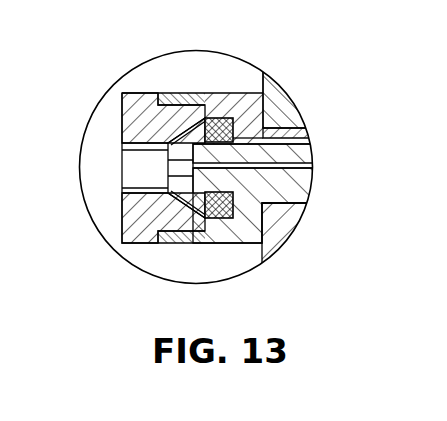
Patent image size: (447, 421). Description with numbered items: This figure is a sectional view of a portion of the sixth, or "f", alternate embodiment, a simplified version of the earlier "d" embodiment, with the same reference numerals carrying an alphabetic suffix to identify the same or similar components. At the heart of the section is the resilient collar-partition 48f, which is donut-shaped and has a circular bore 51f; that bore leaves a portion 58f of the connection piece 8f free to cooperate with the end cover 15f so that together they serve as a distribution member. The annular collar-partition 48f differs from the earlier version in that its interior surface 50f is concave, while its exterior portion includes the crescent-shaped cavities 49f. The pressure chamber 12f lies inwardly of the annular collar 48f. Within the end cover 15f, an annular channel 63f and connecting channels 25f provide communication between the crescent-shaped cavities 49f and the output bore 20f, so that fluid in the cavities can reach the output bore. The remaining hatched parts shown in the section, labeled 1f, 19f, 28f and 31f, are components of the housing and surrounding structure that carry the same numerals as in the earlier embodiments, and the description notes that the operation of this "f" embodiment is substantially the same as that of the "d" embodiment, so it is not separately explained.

The housing body 1f is at (283, 214).
The connection piece 8f is at (257, 220).
The pressure chamber 12f is at (271, 103).
The end cover 15f is at (132, 100).
The lower insert flange 19f is at (162, 187).
The output bore 20f is at (141, 179).
The connecting channels 25f is at (188, 133).
The inner sleeve 28f is at (303, 168).
The intermediate sleeve 31f is at (303, 148).
The resilient collar-partition 48f is at (234, 121).
The crescent-shaped cavities 49f is at (206, 117).
The interior surface 50f is at (218, 118).
The circular bore 51f is at (266, 128).
The portion of the connection piece 58f is at (220, 174).
The annular channel 63f is at (200, 225).